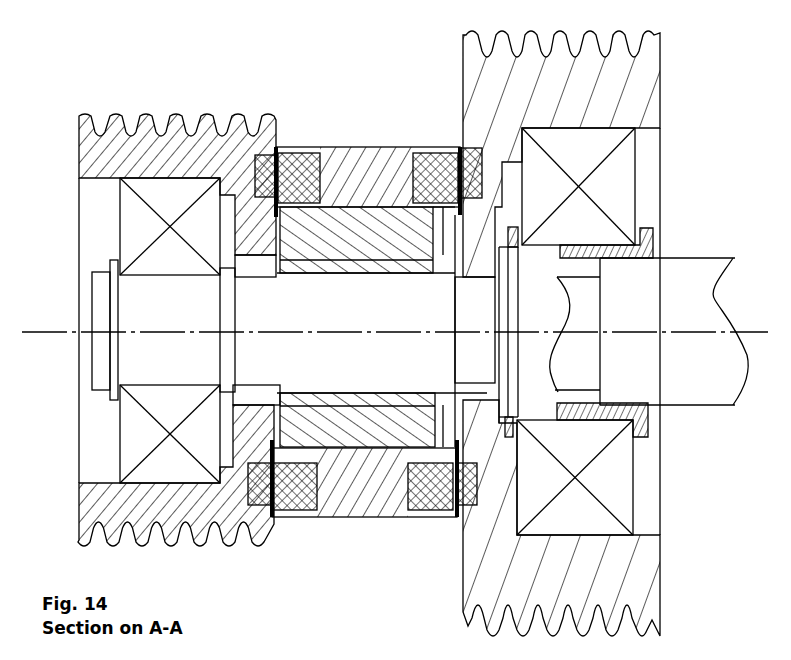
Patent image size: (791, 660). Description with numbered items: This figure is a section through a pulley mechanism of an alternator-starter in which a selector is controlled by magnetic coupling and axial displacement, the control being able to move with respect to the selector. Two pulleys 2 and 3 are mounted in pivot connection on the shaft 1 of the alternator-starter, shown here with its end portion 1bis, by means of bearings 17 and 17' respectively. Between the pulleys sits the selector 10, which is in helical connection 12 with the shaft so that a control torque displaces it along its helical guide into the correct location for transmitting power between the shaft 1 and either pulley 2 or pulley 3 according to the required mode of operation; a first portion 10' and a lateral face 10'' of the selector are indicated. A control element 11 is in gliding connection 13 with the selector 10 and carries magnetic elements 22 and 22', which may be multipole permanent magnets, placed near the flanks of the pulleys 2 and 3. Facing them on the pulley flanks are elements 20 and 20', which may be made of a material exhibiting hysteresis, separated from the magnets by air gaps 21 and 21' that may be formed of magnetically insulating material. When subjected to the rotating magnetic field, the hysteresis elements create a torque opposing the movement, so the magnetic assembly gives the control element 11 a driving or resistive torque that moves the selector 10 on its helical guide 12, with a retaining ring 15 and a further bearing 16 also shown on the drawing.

The shaft 1 is at (642, 353).
The shaft end portion 1bis is at (530, 413).
The pulley 2 is at (207, 137).
The pulley 3 is at (597, 85).
The selector 10 is at (305, 277).
The first hub part 10' is at (356, 261).
The lateral face of the selector 10'' is at (417, 261).
The control element 11 is at (338, 500).
The helical connection 12 is at (350, 400).
The gliding connection 13 is at (440, 452).
The retaining ring 15 is at (262, 483).
The bearing 16 is at (468, 352).
The bearing 17 is at (144, 286).
The bearing 17' is at (627, 186).
The hysteresis element 20 is at (209, 130).
The hysteresis element 20' is at (596, 172).
The air gap 21 is at (240, 140).
The air gap 21' is at (584, 149).
The magnetic element 22 is at (317, 134).
The magnetic element 22' is at (415, 148).